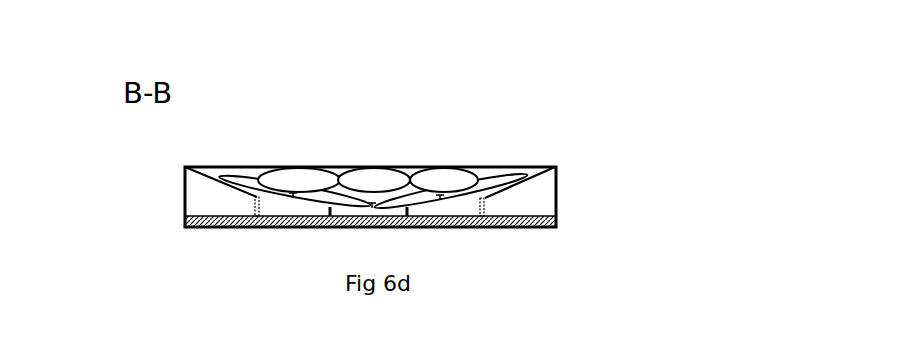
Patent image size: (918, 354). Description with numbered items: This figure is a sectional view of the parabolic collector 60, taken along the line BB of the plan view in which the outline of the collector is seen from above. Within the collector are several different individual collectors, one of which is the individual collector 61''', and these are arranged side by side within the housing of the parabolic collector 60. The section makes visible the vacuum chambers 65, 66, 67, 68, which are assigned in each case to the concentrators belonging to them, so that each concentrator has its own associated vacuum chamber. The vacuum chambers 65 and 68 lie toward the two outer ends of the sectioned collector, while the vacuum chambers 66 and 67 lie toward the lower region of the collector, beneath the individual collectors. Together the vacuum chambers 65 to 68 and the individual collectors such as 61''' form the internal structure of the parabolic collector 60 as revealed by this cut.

The parabolic collector 60 is at (91, 93).
The individual collector 61''' is at (549, 166).
The vacuum chamber 65 is at (522, 201).
The vacuum chamber 66 is at (446, 236).
The vacuum chamber 67 is at (220, 232).
The vacuum chamber 68 is at (218, 200).